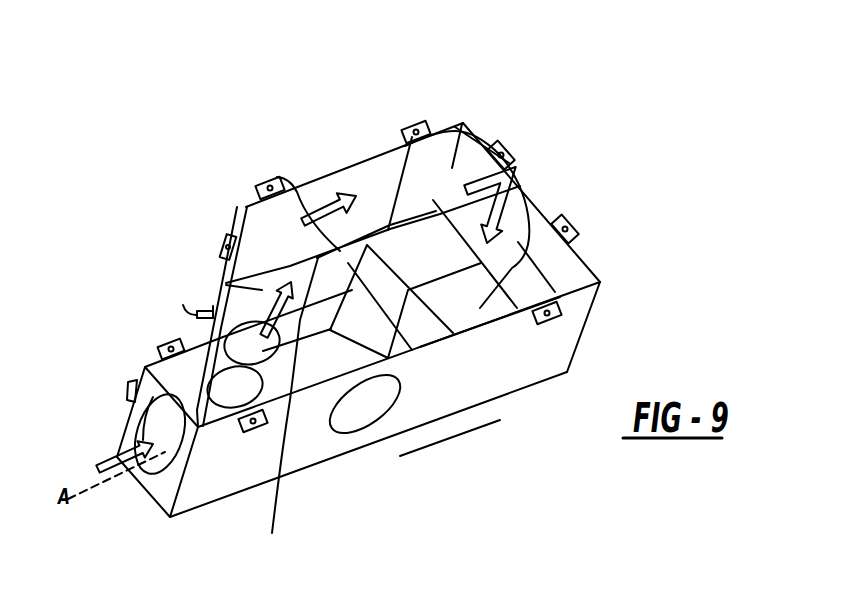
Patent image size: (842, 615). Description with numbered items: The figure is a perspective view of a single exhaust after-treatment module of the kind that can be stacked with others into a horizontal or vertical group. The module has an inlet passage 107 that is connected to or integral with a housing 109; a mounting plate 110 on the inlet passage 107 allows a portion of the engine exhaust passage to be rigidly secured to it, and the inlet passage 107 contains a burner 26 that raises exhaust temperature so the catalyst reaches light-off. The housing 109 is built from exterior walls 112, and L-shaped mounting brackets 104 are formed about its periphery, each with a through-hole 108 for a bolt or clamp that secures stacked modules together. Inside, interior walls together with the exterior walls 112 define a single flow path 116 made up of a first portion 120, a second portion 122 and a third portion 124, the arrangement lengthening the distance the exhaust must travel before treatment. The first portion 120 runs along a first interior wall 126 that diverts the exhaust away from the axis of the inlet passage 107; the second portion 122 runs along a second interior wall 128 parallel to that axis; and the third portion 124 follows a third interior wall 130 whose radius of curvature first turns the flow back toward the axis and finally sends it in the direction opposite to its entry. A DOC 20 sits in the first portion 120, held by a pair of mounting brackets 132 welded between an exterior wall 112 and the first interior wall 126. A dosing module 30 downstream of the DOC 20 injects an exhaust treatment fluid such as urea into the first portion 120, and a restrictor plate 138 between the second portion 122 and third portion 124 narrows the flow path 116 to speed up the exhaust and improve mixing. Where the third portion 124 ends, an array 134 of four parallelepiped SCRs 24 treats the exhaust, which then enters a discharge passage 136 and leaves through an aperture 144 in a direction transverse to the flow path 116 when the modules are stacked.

The DOC 20 is at (282, 342).
The SCR 24 is at (440, 271).
The burner 26 is at (129, 388).
The dosing module 30 is at (183, 305).
The L-shaped mounting bracket 104 is at (267, 180).
The inlet passage 107 is at (176, 512).
The through-hole 108 is at (497, 145).
The housing 109 is at (446, 422).
The mounting plate 110 is at (150, 483).
The exterior wall 112 is at (348, 165).
The flow path 116 is at (308, 178).
The first portion 120 is at (220, 273).
The second portion 122 is at (388, 192).
The third portion 124 is at (453, 167).
The first interior wall 126 is at (245, 204).
The second interior wall 128 is at (292, 187).
The third interior wall 130 is at (453, 125).
The mounting bracket 132 is at (260, 409).
The array 134 is at (483, 348).
The discharge passage 136 is at (307, 367).
The restrictor plate 138 is at (433, 200).
The aperture 144 is at (386, 383).